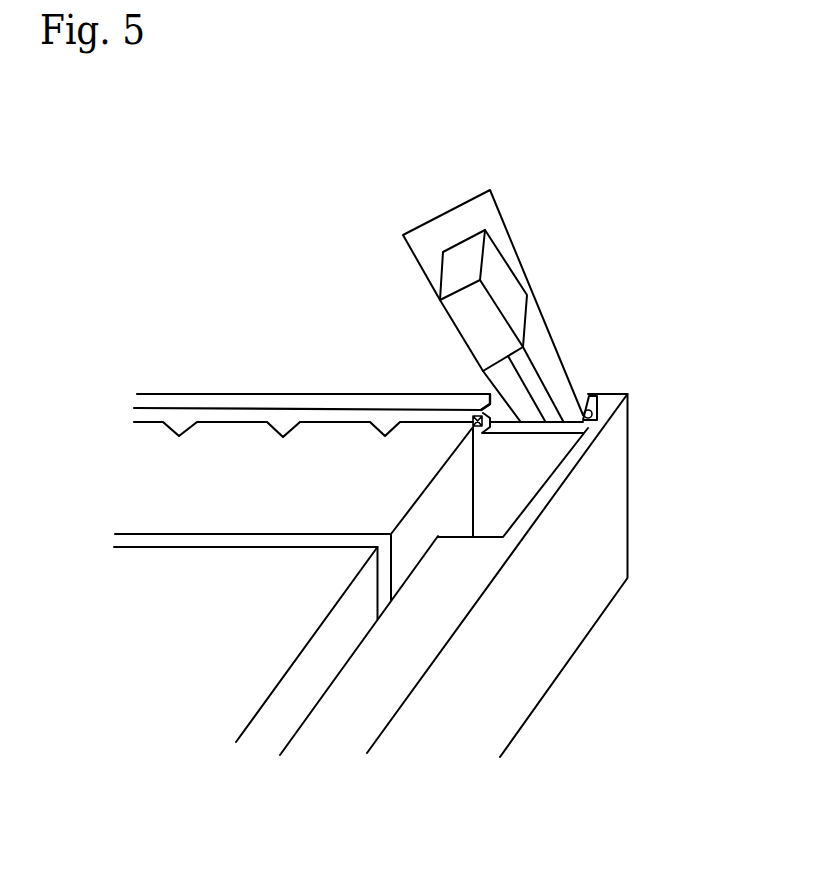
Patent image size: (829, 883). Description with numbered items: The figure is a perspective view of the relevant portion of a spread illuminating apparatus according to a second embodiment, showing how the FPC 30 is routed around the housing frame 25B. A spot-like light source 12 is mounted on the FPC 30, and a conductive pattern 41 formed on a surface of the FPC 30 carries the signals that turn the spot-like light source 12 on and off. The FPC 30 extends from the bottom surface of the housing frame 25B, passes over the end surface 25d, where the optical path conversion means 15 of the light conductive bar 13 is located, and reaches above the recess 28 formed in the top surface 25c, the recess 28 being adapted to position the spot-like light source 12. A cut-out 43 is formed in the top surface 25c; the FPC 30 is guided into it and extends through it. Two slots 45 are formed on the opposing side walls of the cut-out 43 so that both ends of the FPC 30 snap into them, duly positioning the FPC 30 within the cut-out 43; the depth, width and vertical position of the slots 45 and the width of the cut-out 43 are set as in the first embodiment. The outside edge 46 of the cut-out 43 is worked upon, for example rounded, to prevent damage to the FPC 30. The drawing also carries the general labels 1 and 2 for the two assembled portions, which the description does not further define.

The card 1 is at (317, 242).
The housing 2 is at (183, 640).
The spot-like light source 12 is at (503, 287).
The light conductive bar 13 is at (228, 466).
The optical path conversion means 15 is at (283, 421).
The top surface 25c is at (392, 399).
The end surface 25d is at (325, 388).
The housing frame 25B is at (382, 702).
The recess 28 is at (508, 515).
The FPC 30 is at (487, 213).
The conductive pattern 41 is at (540, 353).
The cut-out 43 is at (535, 430).
The slot 45 is at (472, 421).
The outside edge 46 is at (592, 409).